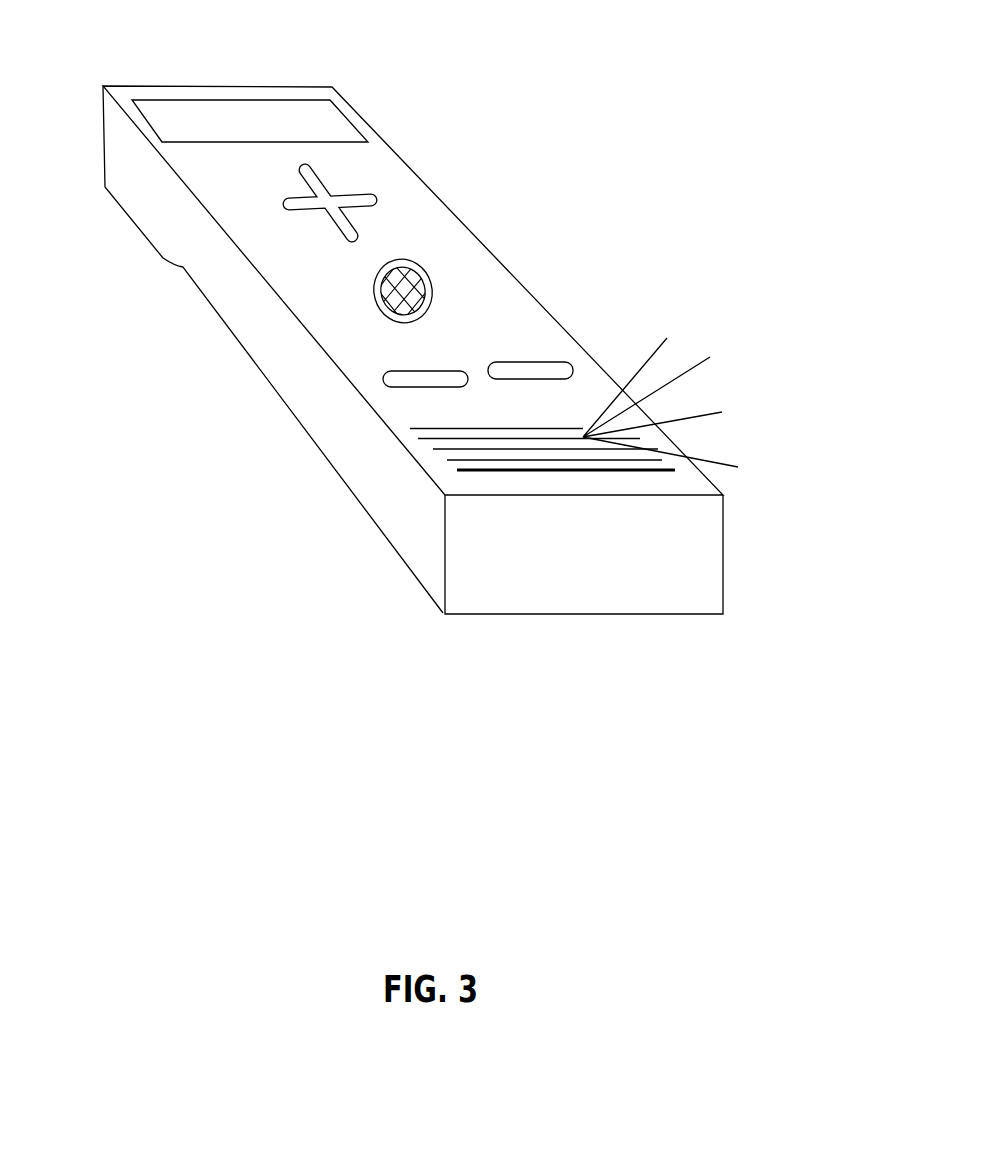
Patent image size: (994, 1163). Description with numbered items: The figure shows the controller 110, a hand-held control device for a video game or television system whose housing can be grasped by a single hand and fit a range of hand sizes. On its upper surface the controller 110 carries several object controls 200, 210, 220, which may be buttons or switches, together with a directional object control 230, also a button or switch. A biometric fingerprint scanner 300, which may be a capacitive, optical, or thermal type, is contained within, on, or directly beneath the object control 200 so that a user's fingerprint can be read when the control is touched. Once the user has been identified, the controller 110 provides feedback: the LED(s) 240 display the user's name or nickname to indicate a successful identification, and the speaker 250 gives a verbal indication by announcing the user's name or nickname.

The controller 110 is at (97, 480).
The object control 200 is at (428, 277).
The object control 210 is at (547, 362).
The object control 220 is at (403, 388).
The directional object control 230 is at (377, 200).
The LED(s) 240 is at (276, 112).
The speaker 250 is at (450, 450).
The biometric fingerprint scanner 300 is at (380, 302).